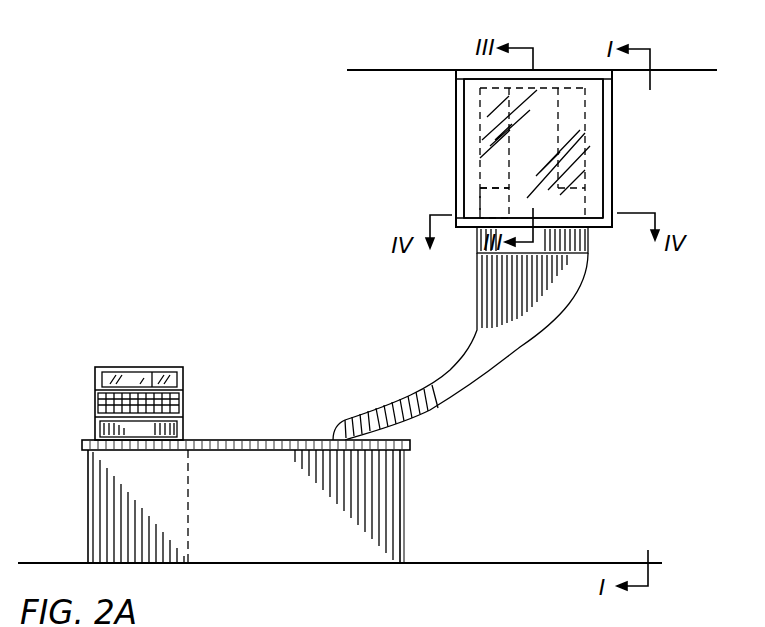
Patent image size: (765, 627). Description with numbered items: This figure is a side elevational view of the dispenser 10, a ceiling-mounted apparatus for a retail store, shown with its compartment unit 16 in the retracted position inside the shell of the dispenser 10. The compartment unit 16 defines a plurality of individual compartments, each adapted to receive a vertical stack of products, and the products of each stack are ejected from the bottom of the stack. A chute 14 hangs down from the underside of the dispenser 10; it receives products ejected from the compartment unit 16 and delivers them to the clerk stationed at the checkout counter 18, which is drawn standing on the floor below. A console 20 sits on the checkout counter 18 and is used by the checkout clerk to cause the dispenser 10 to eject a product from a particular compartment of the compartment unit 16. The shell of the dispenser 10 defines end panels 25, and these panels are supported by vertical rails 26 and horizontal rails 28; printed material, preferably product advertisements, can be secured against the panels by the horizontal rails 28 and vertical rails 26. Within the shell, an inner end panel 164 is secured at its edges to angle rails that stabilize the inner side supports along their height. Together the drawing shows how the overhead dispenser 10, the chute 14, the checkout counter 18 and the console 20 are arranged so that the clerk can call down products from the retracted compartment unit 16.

The dispenser 10 is at (452, 110).
The chute 14 is at (515, 335).
The compartment unit 16 is at (490, 152).
The checkout counter 18 is at (392, 505).
The console 20 is at (95, 383).
The end panel 25 is at (592, 125).
The vertical rail 26 is at (456, 142).
The horizontal rail 28 is at (572, 70).
The inner end panel 164 is at (480, 200).